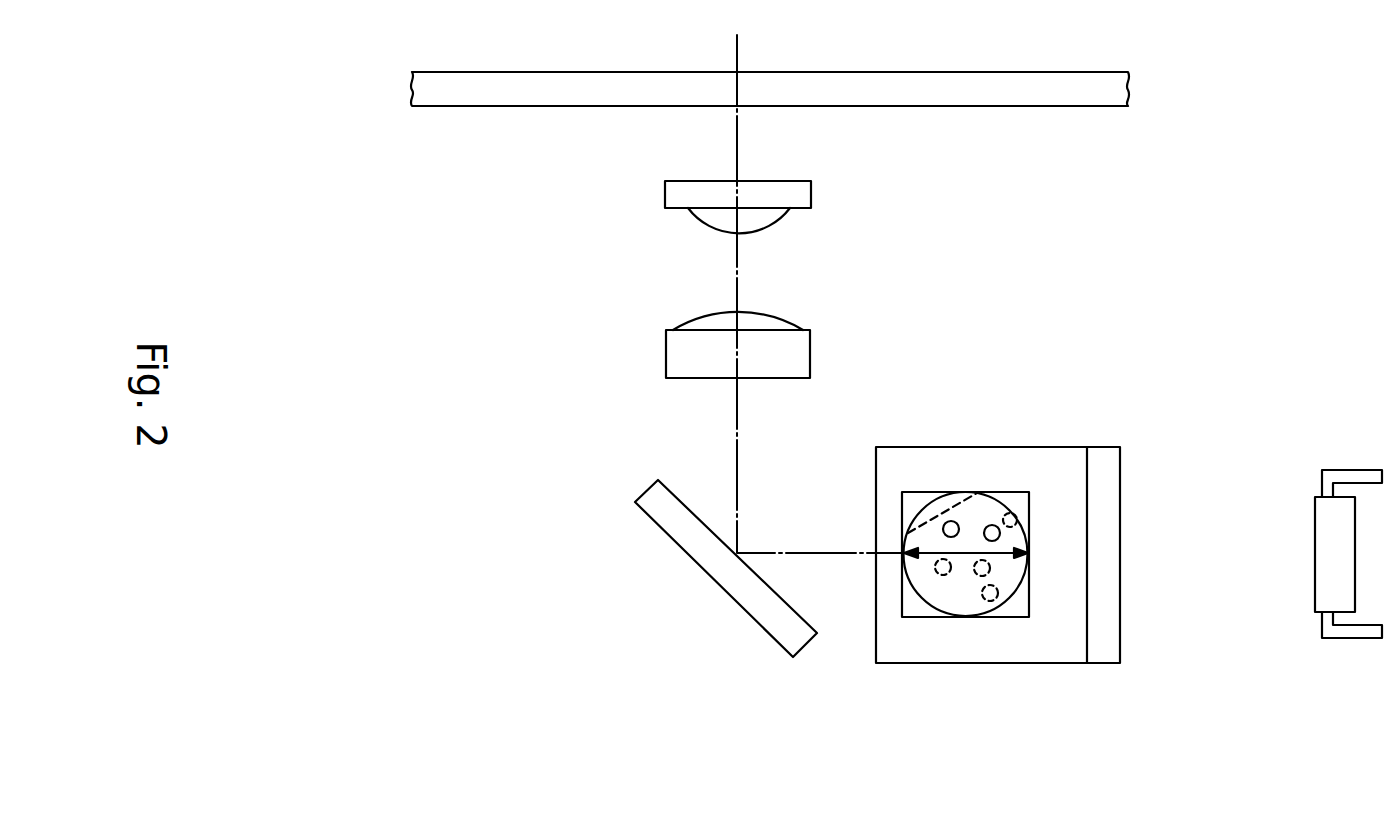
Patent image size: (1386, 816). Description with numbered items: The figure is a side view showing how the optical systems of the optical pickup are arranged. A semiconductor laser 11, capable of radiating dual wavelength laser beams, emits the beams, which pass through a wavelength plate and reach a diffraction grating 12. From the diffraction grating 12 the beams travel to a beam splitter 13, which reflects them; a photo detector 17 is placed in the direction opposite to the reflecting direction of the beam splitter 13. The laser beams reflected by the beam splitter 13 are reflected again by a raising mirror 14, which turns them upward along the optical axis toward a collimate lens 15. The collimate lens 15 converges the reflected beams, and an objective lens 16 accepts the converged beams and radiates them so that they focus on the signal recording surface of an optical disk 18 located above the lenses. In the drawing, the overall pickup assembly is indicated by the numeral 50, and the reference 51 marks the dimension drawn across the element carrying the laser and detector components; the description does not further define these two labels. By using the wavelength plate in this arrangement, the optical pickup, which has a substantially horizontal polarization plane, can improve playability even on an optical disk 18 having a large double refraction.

The semiconductor laser 11 is at (947, 518).
The diffraction grating 12 is at (1012, 516).
The beam splitter 13 is at (1120, 505).
The raising mirror 14 is at (645, 491).
The collimate lens 15 is at (810, 348).
The objective lens 16 is at (811, 191).
The photo detector 17 is at (1343, 470).
The optical disk 18 is at (1028, 72).
The optical sensor unit 50 is at (1081, 265).
The light axis spacing 51 is at (968, 553).